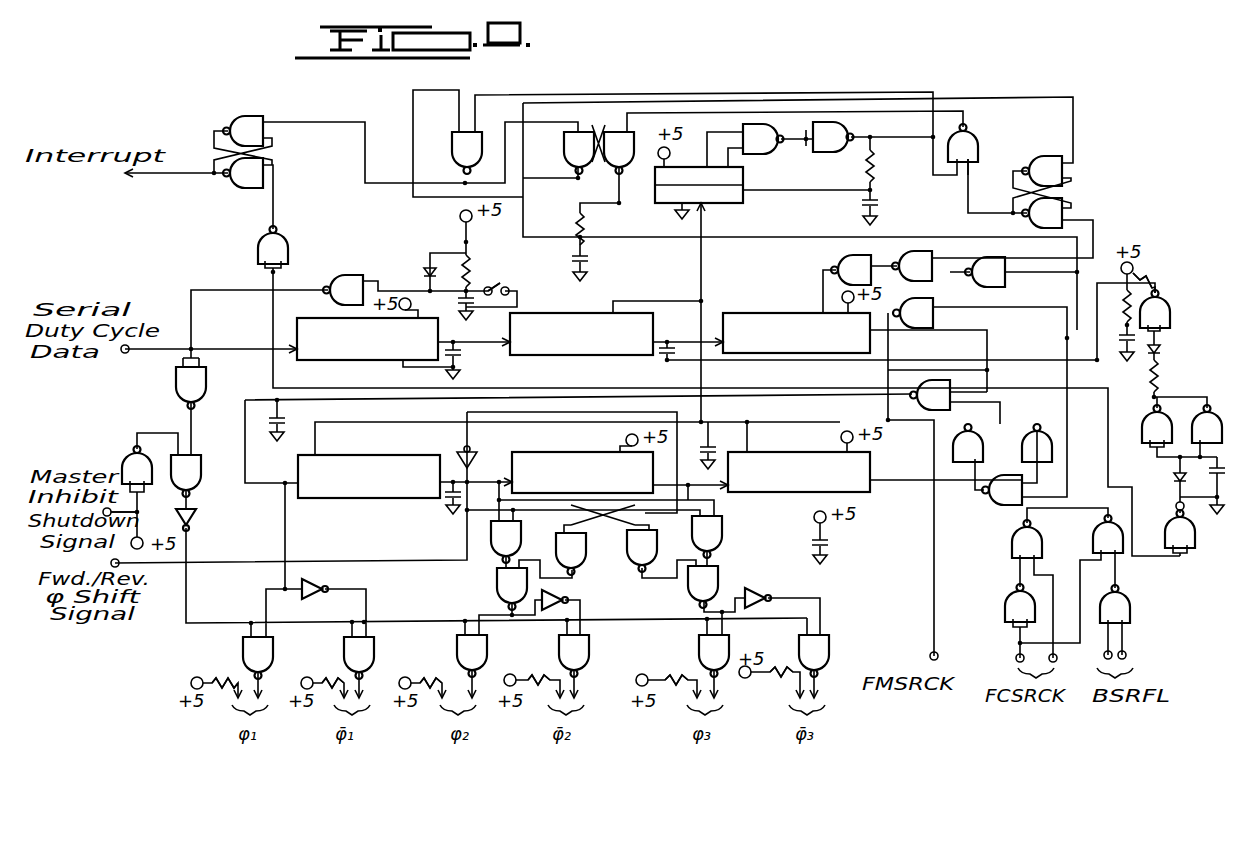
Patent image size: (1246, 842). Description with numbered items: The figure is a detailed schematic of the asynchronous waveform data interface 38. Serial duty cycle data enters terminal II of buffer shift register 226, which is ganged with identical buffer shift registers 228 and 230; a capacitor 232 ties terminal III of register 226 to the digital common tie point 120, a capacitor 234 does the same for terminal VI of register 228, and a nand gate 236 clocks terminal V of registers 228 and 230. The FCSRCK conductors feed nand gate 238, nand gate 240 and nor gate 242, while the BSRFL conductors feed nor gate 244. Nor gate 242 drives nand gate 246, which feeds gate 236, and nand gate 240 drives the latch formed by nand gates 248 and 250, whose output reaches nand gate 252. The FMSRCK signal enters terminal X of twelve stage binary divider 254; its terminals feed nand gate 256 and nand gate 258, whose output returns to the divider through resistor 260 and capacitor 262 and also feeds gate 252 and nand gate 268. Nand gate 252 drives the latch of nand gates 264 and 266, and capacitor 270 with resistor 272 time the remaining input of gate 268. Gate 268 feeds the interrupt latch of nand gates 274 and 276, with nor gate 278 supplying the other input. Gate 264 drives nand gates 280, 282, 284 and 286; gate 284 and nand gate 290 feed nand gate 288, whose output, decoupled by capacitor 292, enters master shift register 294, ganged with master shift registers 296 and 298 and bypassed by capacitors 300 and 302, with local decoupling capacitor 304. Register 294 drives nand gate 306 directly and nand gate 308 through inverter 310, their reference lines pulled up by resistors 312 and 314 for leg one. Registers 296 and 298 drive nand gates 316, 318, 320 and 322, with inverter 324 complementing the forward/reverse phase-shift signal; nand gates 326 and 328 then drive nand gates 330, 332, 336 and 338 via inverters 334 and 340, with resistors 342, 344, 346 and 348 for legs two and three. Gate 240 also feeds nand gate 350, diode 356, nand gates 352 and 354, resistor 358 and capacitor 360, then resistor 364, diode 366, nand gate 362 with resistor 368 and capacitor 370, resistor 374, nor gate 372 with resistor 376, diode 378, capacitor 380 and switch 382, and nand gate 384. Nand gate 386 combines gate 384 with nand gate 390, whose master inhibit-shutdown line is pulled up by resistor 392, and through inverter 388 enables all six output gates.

The asynchronous waveform data interface 38 is at (1135, 80).
The digital common tie point 120 is at (590, 278).
The buffer shift register 226 is at (345, 355).
The buffer shift register 228 is at (560, 322).
The buffer shift register 230 is at (795, 343).
The capacitor 232 is at (462, 352).
The capacitor 234 is at (672, 358).
The nand gate 236 is at (833, 265).
The nand gate 238 is at (1010, 604).
The nand gate 240 is at (1100, 538).
The nor gate 242 is at (1015, 548).
The nor gate 244 is at (1130, 610).
The nand gate 246 is at (925, 252).
The nand gate 248 is at (1060, 212).
The nand gate 250 is at (1060, 170).
The nand gate 252 is at (975, 140).
The twelve stage binary divider 254 is at (736, 203).
The nand gate 256 is at (762, 150).
The nand gate 258 is at (820, 150).
The resistor 260 is at (874, 168).
The capacitor 262 is at (876, 200).
The nand gate 264 is at (630, 140).
The nand gate 266 is at (565, 155).
The nand gate 268 is at (455, 155).
The capacitor 270 is at (590, 268).
The resistor 272 is at (575, 228).
The nand gate 274 is at (255, 118).
The nand gate 276 is at (252, 188).
The nor gate 278 is at (280, 233).
The nand gate 280 is at (1003, 268).
The nand gate 282 is at (925, 302).
The nand gate 284 is at (1030, 445).
The nand gate 286 is at (1000, 503).
The nand gate 288 is at (950, 398).
The nand gate 290 is at (980, 458).
The capacitor 292 is at (288, 424).
The master shift register 294 is at (360, 500).
The master shift register 296 is at (565, 460).
The master shift register 298 is at (825, 462).
The capacitor 300 is at (453, 505).
The capacitor 302 is at (712, 447).
The capacitor 304 is at (830, 540).
The nand gate 306 is at (244, 650).
The nand gate 308 is at (370, 648).
The inverter 310 is at (325, 582).
The resistor 312 is at (215, 675).
The resistor 314 is at (330, 678).
The nand gate 316 is at (500, 548).
The nand gate 318 is at (656, 548).
The nand gate 320 is at (720, 530).
The nand gate 322 is at (583, 550).
The inverter 324 is at (458, 455).
The nand gate 326 is at (500, 590).
The nand gate 328 is at (716, 575).
The nand gate 330 is at (480, 650).
The nand gate 332 is at (575, 640).
The inverter 334 is at (568, 595).
The nand gate 336 is at (700, 643).
The nand gate 338 is at (830, 645).
The inverter 340 is at (762, 590).
The resistor 342 is at (434, 680).
The resistor 344 is at (540, 678).
The resistor 346 is at (672, 675).
The resistor 348 is at (782, 665).
The nand gate 350 is at (1170, 545).
The nand gate 352 is at (1148, 425).
The nand gate 354 is at (1215, 418).
The diode 356 is at (1175, 478).
The resistor 358 is at (1210, 470).
The capacitor 360 is at (1175, 503).
The nand gate 362 is at (1168, 305).
The resistor 364 is at (1160, 378).
The diode 366 is at (1162, 350).
The resistor 368 is at (1150, 290).
The capacitor 370 is at (1136, 338).
The nor gate 372 is at (350, 270).
The resistor 374 is at (1160, 265).
The resistor 376 is at (468, 258).
The diode 378 is at (425, 268).
The capacitor 380 is at (510, 295).
The single pole single throw switch 382 is at (498, 286).
The nand gate 384 is at (204, 390).
The nand gate 386 is at (196, 465).
The inverter 388 is at (198, 520).
The nand gate 390 is at (130, 455).
The resistor 392 is at (150, 515).